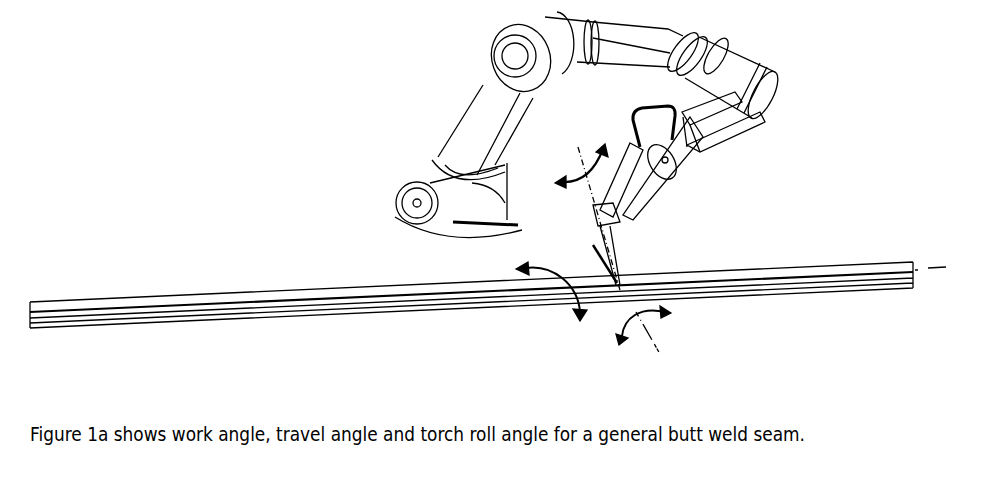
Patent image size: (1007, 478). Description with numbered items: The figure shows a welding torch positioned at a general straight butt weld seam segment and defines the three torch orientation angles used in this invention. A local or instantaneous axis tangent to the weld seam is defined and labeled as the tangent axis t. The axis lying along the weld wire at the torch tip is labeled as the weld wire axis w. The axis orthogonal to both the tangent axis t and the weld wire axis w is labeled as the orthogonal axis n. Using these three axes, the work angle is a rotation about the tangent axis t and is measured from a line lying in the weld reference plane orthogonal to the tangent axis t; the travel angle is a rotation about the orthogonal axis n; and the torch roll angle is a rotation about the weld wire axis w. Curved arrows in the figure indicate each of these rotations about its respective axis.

The weld wire axis w is at (599, 204).
The orthogonal axis n is at (648, 341).
The seam tangent axis t is at (930, 255).